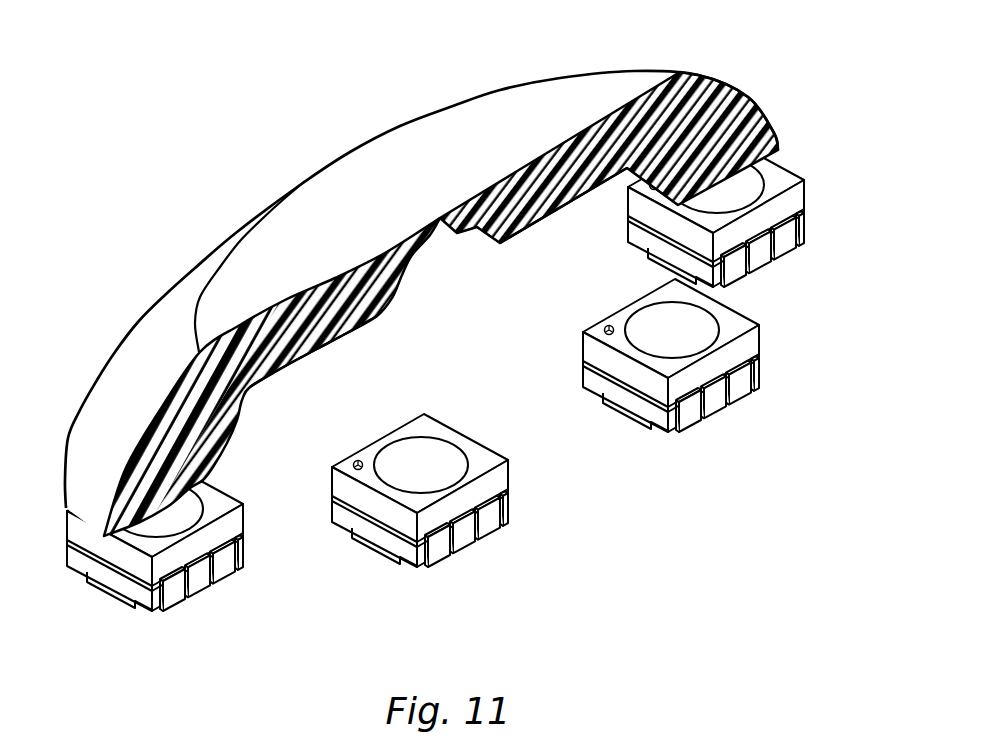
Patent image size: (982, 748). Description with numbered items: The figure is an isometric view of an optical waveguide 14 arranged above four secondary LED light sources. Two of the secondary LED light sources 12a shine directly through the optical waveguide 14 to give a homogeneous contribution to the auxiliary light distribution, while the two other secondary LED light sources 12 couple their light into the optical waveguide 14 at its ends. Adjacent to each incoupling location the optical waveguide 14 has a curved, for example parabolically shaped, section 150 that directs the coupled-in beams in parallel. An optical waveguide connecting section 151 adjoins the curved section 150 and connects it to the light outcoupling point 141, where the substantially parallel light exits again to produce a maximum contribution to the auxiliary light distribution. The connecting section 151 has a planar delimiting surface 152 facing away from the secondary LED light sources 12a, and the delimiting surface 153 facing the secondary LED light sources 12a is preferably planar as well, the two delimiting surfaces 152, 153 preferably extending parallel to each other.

The secondary LED light source 12 is at (177, 594).
The secondary LED light source 12a is at (437, 548).
The optical waveguide 14 is at (183, 281).
The light outcoupling point 141 is at (408, 293).
The curved section 150 is at (423, 272).
The optical waveguide connecting section 151 is at (285, 355).
The delimiting surface 152 is at (337, 217).
The delimiting surface 153 is at (306, 359).